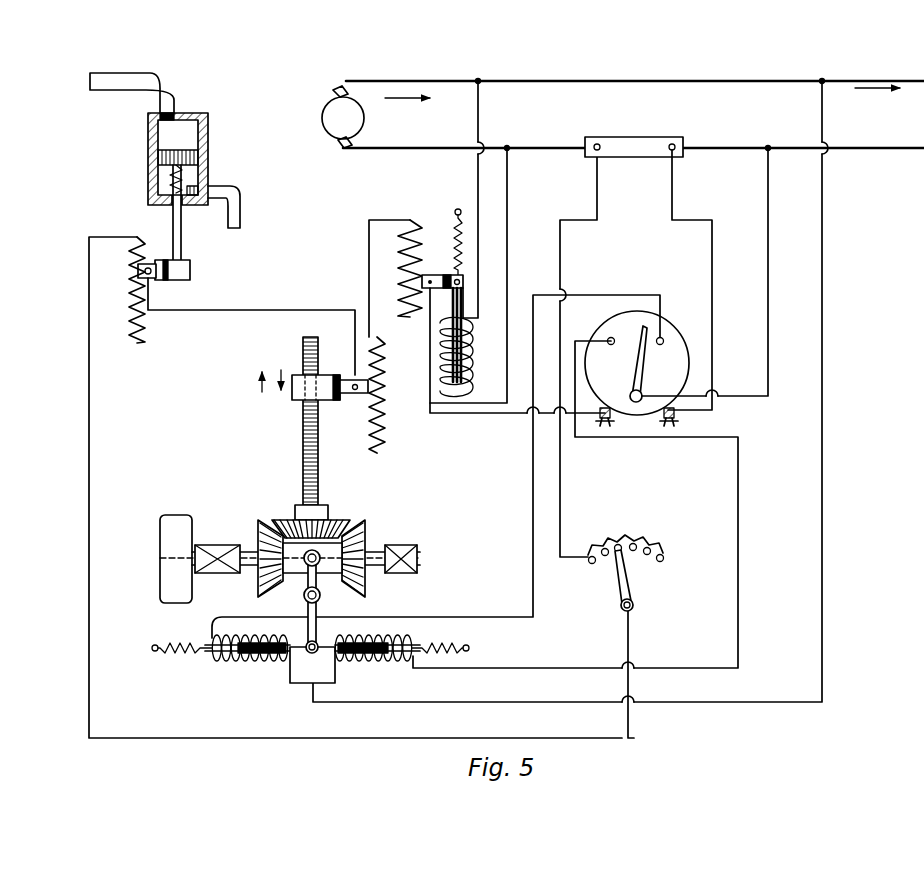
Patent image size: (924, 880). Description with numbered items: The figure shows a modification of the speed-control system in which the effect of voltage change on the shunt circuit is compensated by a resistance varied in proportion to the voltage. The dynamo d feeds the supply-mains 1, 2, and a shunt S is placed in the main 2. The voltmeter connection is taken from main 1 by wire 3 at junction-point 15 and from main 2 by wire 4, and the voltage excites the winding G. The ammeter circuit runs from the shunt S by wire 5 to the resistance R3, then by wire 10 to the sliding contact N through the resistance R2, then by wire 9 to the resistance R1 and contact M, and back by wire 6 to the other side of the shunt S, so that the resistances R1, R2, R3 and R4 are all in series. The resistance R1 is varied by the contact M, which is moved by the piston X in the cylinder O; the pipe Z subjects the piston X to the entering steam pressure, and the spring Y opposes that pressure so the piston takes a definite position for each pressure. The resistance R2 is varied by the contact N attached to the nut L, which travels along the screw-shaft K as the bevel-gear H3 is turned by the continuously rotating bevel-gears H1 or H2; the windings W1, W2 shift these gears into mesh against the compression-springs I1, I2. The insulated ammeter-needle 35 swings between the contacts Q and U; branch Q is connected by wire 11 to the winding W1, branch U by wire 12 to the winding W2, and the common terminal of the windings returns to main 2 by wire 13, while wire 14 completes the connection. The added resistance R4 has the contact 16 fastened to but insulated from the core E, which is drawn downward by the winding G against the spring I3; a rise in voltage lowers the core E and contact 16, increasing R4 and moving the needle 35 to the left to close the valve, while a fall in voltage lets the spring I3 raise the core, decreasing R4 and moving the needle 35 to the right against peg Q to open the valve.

The pipe Z is at (143, 91).
The cylinder O is at (211, 122).
The piston X is at (158, 157).
The spring Y is at (212, 182).
The sliding contact N is at (160, 262).
The resistance R1 is at (150, 297).
The wire 9 is at (270, 311).
The wire 6 is at (596, 186).
The dynamo d is at (335, 116).
The supply-main 1 is at (635, 87).
The supply-main 2 is at (633, 138).
The wire 4 is at (479, 120).
The wire 3 is at (508, 179).
The shunt S is at (634, 135).
The wire 5 is at (673, 172).
The conductor 14 is at (760, 250).
The voltmeter-needle branch Q is at (637, 368).
The voltmeter-needle branch U is at (614, 338).
The ammeter-needle 35 is at (638, 370).
The wire 11 is at (606, 296).
The wire 12 is at (626, 440).
The wire 13 is at (823, 408).
The junction-point 15 is at (375, 296).
The resistance R4 is at (406, 260).
The spring I3 is at (466, 242).
The contact 16 is at (434, 277).
The winding G is at (447, 335).
The core E is at (474, 356).
The wire 10 is at (464, 424).
The screw-shaft K is at (320, 470).
The nut L is at (290, 400).
The sliding contact M is at (354, 399).
The resistance R2 is at (390, 395).
The bevel-gear H3 is at (292, 517).
The bevel-gear H1 is at (258, 528).
The bevel-gear H2 is at (367, 530).
The winding W1 is at (270, 664).
The winding W2 is at (377, 657).
The compression-spring I1 is at (182, 637).
The compression-spring I2 is at (440, 636).
The resistance R3 is at (630, 574).